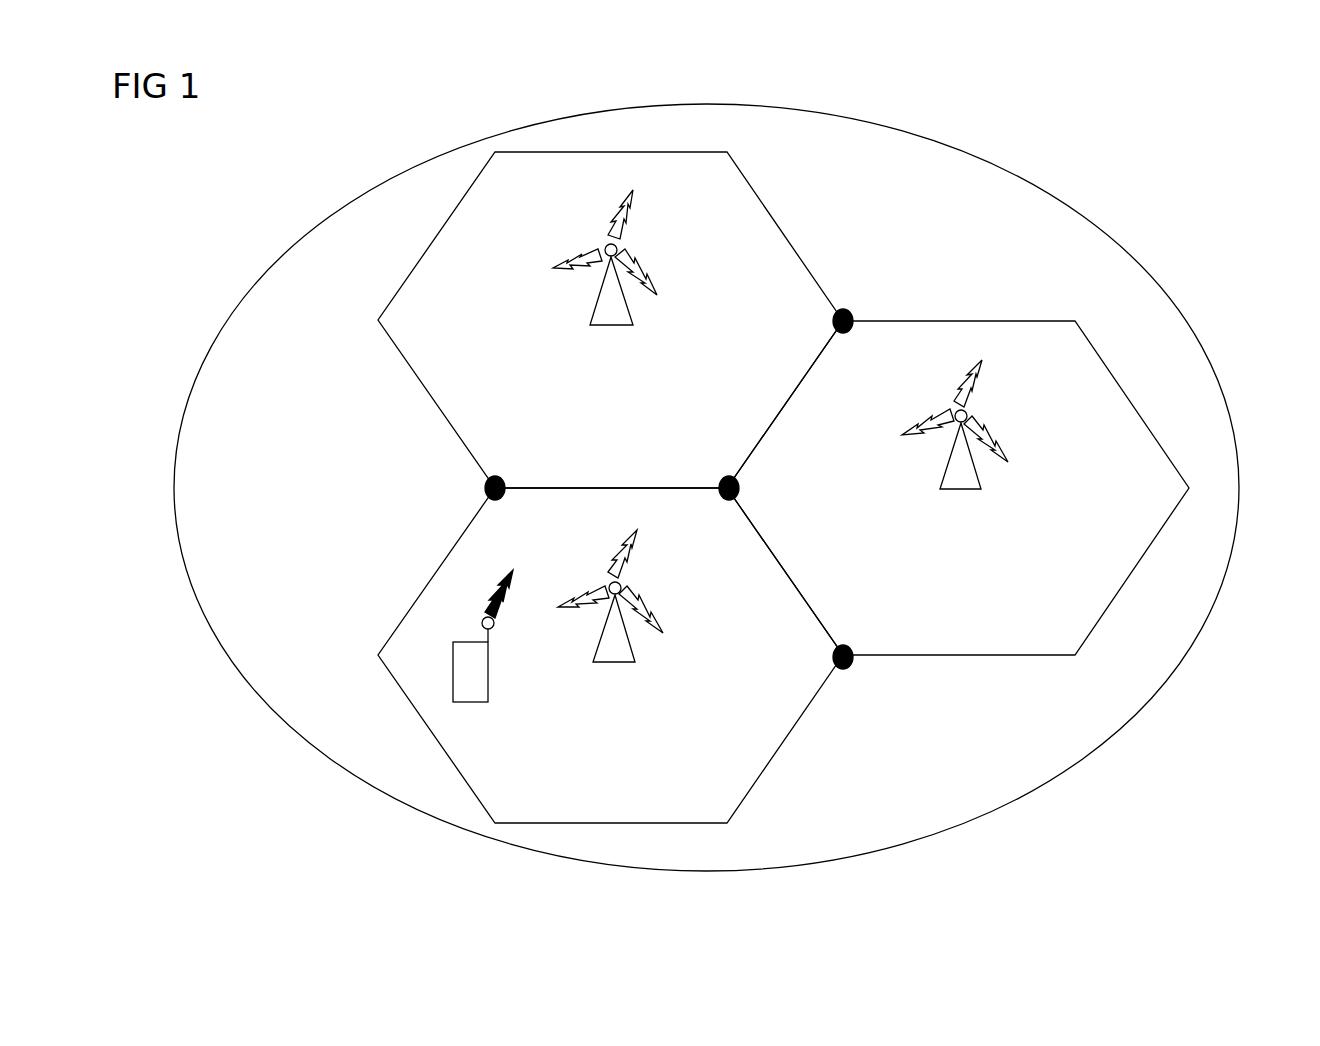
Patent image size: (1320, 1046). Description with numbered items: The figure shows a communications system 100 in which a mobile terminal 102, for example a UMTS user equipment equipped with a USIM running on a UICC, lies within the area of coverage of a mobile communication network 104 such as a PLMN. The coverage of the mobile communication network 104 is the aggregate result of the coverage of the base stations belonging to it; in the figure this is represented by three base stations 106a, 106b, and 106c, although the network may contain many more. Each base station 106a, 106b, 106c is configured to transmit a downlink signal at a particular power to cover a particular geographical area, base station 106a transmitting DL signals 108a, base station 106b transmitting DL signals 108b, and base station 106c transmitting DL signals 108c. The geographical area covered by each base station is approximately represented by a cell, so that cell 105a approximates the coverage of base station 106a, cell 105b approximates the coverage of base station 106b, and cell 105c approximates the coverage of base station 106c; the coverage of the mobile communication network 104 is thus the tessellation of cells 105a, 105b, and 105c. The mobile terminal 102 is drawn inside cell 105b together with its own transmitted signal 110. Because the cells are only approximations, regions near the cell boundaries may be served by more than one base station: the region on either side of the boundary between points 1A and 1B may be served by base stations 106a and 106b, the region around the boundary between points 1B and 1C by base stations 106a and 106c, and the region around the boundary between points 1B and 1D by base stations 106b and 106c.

The communications system 100 is at (1235, 163).
The mobile terminal 102 is at (467, 683).
The mobile communication network 104 is at (1140, 710).
The cell 105a is at (416, 375).
The cell 105b is at (420, 597).
The cell 105c is at (935, 321).
The base station 106a is at (607, 302).
The base station 106b is at (610, 643).
The base station 106c is at (955, 476).
The DL signals 108a is at (625, 220).
The DL signals 108b is at (630, 555).
The DL signals 108c is at (977, 383).
The device transmission signal 110 is at (508, 577).
The point 1A is at (503, 477).
The point 1B is at (720, 482).
The point 1C is at (822, 318).
The point 1D is at (852, 650).